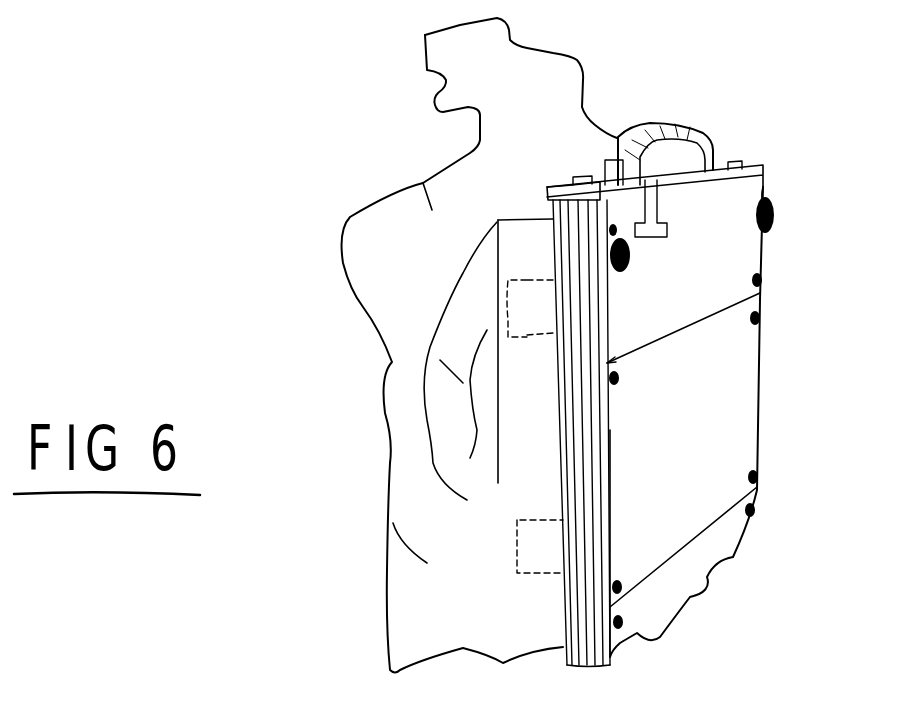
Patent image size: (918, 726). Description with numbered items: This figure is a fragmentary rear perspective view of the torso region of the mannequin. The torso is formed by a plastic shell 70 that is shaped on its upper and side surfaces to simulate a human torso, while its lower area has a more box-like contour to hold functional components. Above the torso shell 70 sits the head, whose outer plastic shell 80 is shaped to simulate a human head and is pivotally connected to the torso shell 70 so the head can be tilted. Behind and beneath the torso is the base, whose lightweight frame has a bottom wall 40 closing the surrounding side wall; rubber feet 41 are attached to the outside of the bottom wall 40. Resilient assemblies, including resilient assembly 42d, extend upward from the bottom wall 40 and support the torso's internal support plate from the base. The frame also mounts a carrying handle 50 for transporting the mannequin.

The bottom wall 40 is at (690, 447).
The rubber feet 41 is at (623, 238).
The resilient assembly 42d is at (543, 307).
The carrying handle 50 is at (690, 133).
The torso shell 70 is at (350, 217).
The head shell 80 is at (437, 86).